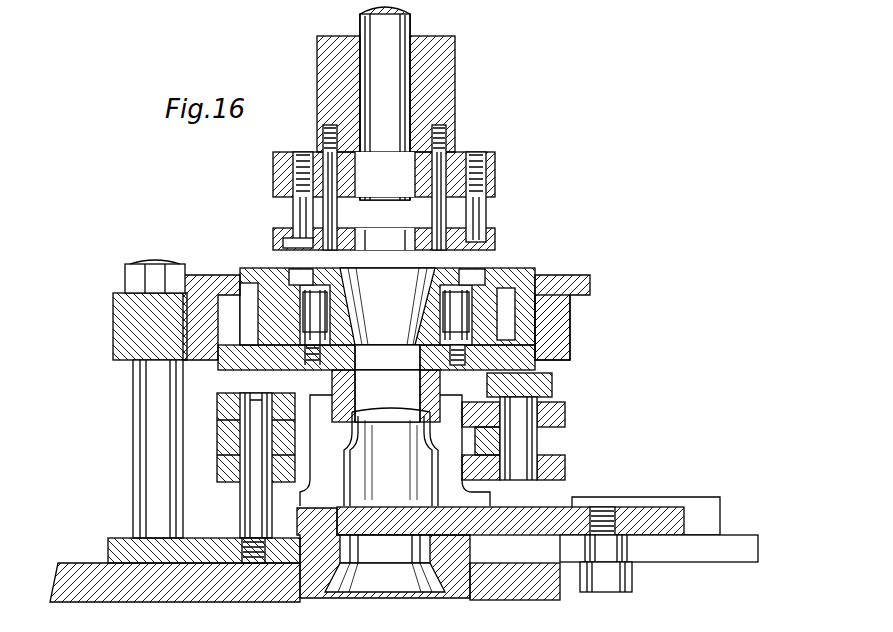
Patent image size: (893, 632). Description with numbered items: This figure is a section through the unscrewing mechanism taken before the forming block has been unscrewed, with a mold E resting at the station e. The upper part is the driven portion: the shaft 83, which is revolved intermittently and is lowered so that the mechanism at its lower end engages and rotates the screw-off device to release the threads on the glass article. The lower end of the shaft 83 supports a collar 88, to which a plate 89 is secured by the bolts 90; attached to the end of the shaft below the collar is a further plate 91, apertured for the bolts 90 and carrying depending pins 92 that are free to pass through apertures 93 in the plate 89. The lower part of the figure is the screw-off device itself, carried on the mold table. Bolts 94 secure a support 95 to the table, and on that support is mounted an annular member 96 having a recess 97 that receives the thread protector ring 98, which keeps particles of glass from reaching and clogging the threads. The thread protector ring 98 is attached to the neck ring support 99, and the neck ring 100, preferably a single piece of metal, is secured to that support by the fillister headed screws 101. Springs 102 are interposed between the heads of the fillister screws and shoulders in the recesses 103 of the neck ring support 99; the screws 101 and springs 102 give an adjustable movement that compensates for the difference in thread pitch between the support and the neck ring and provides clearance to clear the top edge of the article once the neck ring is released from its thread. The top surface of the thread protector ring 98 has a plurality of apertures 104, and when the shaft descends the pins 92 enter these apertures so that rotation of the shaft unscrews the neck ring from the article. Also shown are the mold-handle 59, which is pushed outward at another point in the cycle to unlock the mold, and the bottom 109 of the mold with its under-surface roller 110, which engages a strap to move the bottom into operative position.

The shaft 83 is at (393, 32).
The collar 88 is at (445, 72).
The plate 89 is at (497, 241).
The bolts 90 is at (440, 210).
The plate 91 is at (497, 170).
The depending pins 92 is at (478, 219).
The apertures 93 is at (293, 244).
The bolts 94 is at (152, 404).
The support 95 is at (165, 312).
The annular member 96 is at (210, 278).
The recess 97 is at (233, 352).
The thread protector ring 98 is at (530, 268).
The neck ring support 99 is at (290, 360).
The neck ring 100 is at (333, 376).
The fillister headed screws 101 is at (460, 313).
The springs 102 is at (327, 311).
The recesses 103 is at (327, 333).
The apertures 104 is at (387, 277).
The mold-handle 59 is at (549, 385).
The bottom of the mold 109 is at (560, 507).
The roller 110 is at (612, 579).
The mold E is at (395, 457).
The station e is at (661, 536).